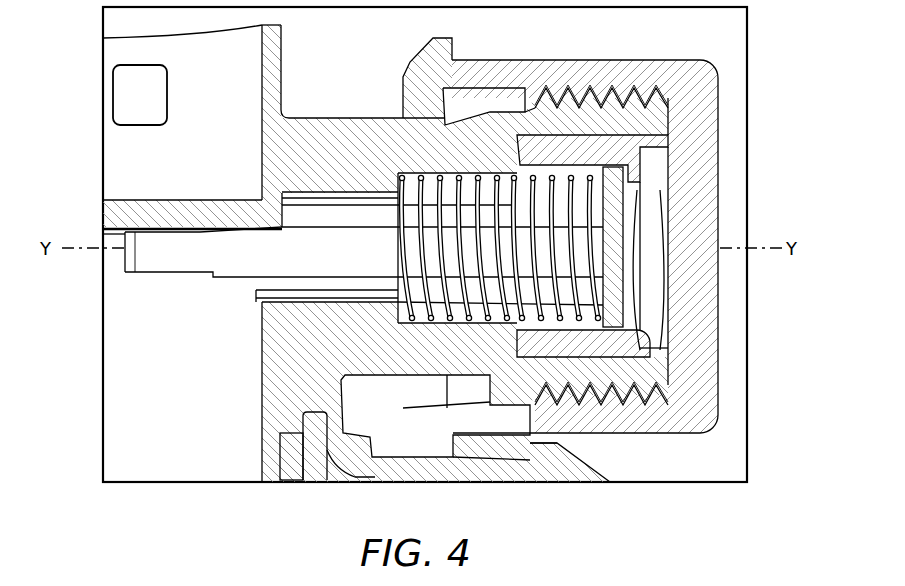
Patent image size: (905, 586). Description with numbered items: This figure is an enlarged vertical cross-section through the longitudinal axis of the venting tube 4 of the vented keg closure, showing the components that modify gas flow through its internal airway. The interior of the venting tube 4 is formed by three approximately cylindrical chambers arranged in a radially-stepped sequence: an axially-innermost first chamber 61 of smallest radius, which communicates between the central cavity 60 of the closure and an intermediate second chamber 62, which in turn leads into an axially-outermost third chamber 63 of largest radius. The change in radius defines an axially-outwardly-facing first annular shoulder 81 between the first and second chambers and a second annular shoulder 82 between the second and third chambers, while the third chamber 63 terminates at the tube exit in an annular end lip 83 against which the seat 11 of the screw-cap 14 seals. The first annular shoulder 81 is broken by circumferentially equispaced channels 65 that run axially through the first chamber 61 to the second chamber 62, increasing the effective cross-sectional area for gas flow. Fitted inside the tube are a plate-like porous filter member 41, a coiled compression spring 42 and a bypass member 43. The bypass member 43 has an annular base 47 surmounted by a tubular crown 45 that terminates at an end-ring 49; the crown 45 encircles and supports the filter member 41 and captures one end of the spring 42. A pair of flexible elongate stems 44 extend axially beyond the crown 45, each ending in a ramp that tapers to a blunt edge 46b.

The venting tube 4 is at (362, 132).
The seat 11 is at (667, 295).
The screw-cap 14 is at (728, 360).
The porous filter member 41 is at (617, 227).
The coiled compression spring 42 is at (462, 310).
The bypass member 43 is at (658, 398).
The flexible elongate stem 44 is at (232, 240).
The tubular crown 45 is at (607, 398).
The blunt edge 46b is at (120, 263).
The annular base 47 is at (633, 168).
The end-ring 49 is at (497, 378).
The central cavity 60 is at (178, 455).
The first chamber 61 is at (357, 287).
The second chamber 62 is at (417, 328).
The third chamber 63 is at (530, 378).
The channels 65 is at (250, 305).
The first annular shoulder 81 is at (398, 182).
The second annular shoulder 82 is at (517, 157).
The annular end lip 83 is at (668, 125).